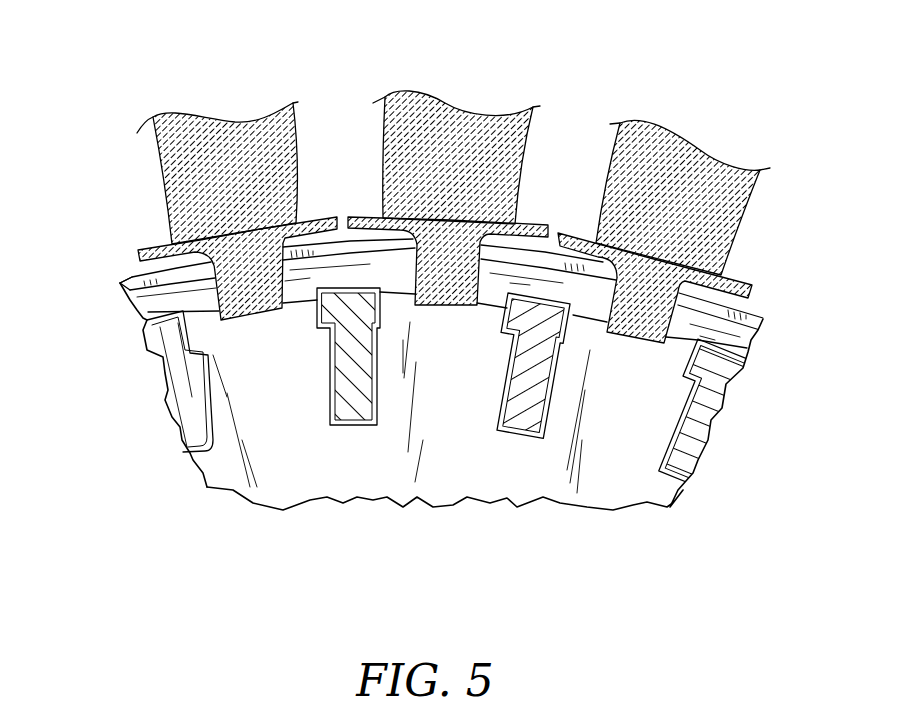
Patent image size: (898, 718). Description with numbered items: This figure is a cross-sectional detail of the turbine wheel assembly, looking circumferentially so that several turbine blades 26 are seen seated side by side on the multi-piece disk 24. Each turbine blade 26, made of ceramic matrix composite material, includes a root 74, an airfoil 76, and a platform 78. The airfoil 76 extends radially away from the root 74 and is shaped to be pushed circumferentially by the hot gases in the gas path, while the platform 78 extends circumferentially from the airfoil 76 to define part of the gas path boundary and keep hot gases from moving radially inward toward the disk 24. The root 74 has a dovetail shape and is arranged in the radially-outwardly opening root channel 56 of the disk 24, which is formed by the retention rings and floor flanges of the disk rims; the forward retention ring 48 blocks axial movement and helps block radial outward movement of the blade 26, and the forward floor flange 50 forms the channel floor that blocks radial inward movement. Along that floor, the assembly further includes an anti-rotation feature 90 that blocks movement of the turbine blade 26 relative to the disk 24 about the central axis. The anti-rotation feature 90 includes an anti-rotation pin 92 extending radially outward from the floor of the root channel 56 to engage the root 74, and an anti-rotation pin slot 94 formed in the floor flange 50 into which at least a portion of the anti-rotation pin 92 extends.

The multi-piece disk 24 is at (680, 505).
The turbine blade 26 is at (435, 185).
The forward retention ring 48 is at (138, 273).
The forward floor flange 50 is at (300, 298).
The root channel 56 is at (677, 323).
The root 74 is at (120, 285).
The airfoil 76 is at (153, 150).
The platform 78 is at (148, 248).
The anti-rotation feature 90 is at (177, 457).
The anti-rotation pin 92 is at (451, 420).
The anti-rotation pin slot 94 is at (373, 422).